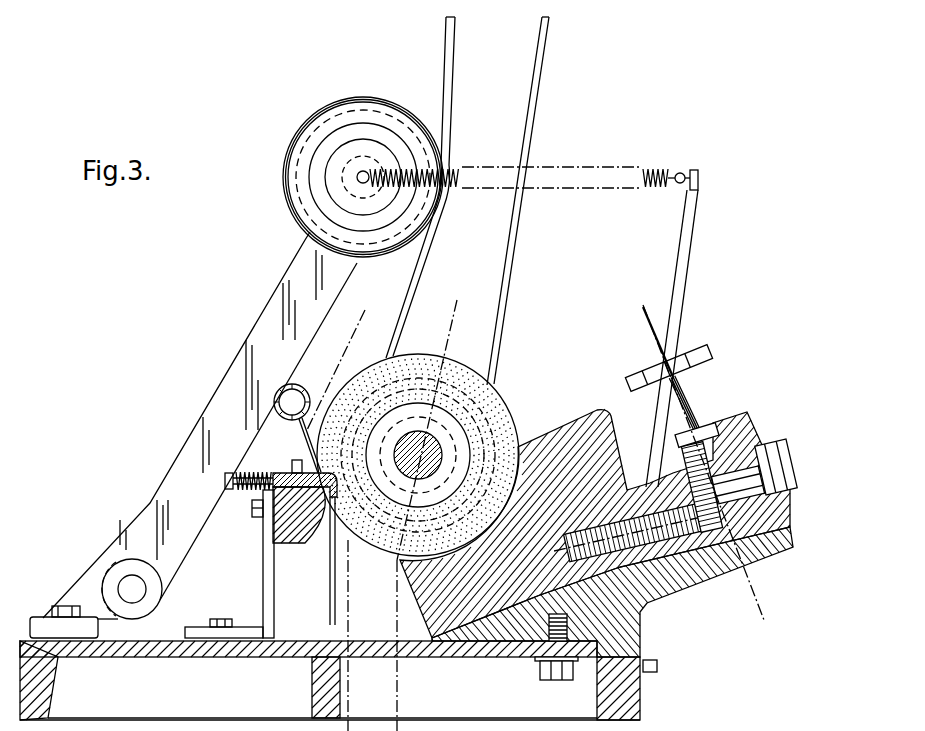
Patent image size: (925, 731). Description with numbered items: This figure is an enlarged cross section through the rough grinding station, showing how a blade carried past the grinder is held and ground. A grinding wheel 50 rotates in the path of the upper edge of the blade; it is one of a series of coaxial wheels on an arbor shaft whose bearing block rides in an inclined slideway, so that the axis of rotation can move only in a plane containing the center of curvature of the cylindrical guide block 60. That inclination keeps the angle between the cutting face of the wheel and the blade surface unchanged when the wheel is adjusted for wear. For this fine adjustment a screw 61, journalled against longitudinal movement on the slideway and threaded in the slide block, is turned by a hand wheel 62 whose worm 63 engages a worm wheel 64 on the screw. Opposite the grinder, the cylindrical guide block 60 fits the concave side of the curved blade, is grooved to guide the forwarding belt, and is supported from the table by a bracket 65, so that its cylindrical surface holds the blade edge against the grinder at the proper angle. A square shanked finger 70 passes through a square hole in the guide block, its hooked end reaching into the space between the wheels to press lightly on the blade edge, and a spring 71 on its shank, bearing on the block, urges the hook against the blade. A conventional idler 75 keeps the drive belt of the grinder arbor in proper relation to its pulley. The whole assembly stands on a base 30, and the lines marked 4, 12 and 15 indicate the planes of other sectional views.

The base 30 is at (146, 658).
The screw 61 is at (702, 527).
The worm 63 is at (693, 472).
The worm wheel 64 is at (700, 440).
The hand wheel 62 is at (707, 347).
The section line 15- 15 is at (640, 327).
The grinding wheel 50 is at (498, 395).
The section line 4- 4 is at (457, 325).
The section line 12- 12 is at (372, 325).
The idler 75 is at (330, 96).
The bracket 65 is at (262, 565).
The cylindrical guide block 60 is at (273, 518).
The square shanked finger 70 is at (280, 473).
The spring 71 is at (266, 478).